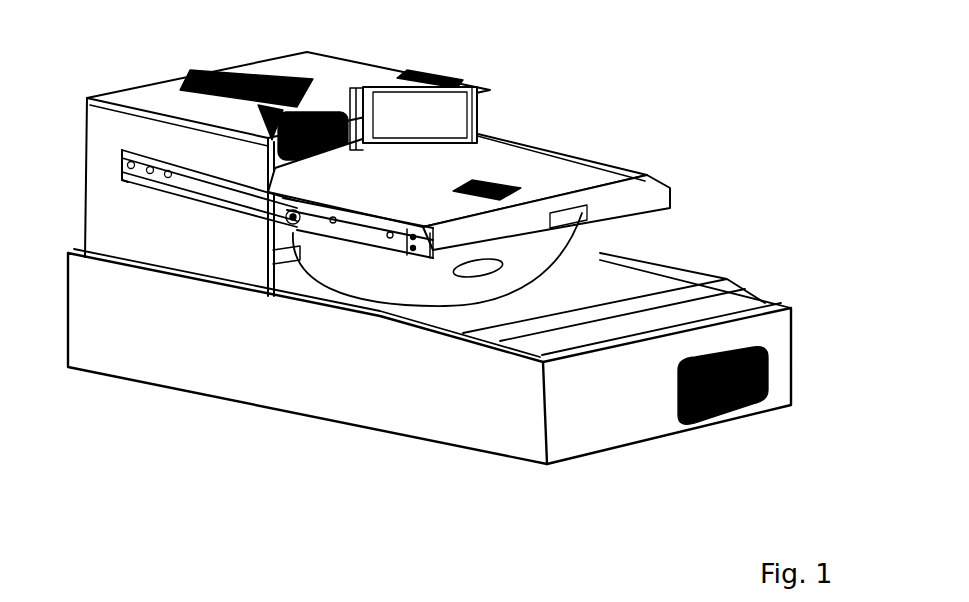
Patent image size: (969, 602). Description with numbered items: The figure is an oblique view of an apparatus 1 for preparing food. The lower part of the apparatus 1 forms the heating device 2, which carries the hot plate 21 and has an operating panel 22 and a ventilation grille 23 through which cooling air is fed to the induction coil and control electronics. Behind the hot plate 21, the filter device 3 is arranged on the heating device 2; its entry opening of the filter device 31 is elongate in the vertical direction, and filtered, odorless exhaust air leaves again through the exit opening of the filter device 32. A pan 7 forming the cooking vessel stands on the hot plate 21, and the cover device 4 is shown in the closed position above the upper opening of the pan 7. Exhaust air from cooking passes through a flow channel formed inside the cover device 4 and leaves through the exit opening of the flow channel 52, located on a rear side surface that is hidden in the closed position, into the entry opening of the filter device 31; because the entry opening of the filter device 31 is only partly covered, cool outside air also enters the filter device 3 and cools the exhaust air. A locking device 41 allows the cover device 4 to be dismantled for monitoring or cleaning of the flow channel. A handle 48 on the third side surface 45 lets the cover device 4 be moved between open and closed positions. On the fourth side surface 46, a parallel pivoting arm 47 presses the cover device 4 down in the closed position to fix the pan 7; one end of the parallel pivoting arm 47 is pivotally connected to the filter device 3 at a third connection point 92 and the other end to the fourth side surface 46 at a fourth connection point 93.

The apparatus 1 is at (84, 20).
The heating device 2 is at (581, 291).
The filter device 3 is at (295, 63).
The cover device 4 is at (580, 152).
The pan 7 is at (562, 258).
The hot plate 21 is at (395, 295).
The operating panel 22 is at (670, 313).
The ventilation grille 23 is at (770, 363).
The entry opening of the filter device 31 is at (355, 88).
The exit opening of the filter device 32 is at (223, 68).
The locking device 41 is at (480, 162).
The third side surface 45 is at (466, 252).
The fourth side surface 46 is at (352, 243).
The parallel pivoting arm 47 is at (213, 183).
The handle 48 is at (647, 197).
The exit opening of the flow channel 52 is at (357, 108).
The third connection point 92 is at (123, 160).
The fourth connection point 93 is at (270, 228).